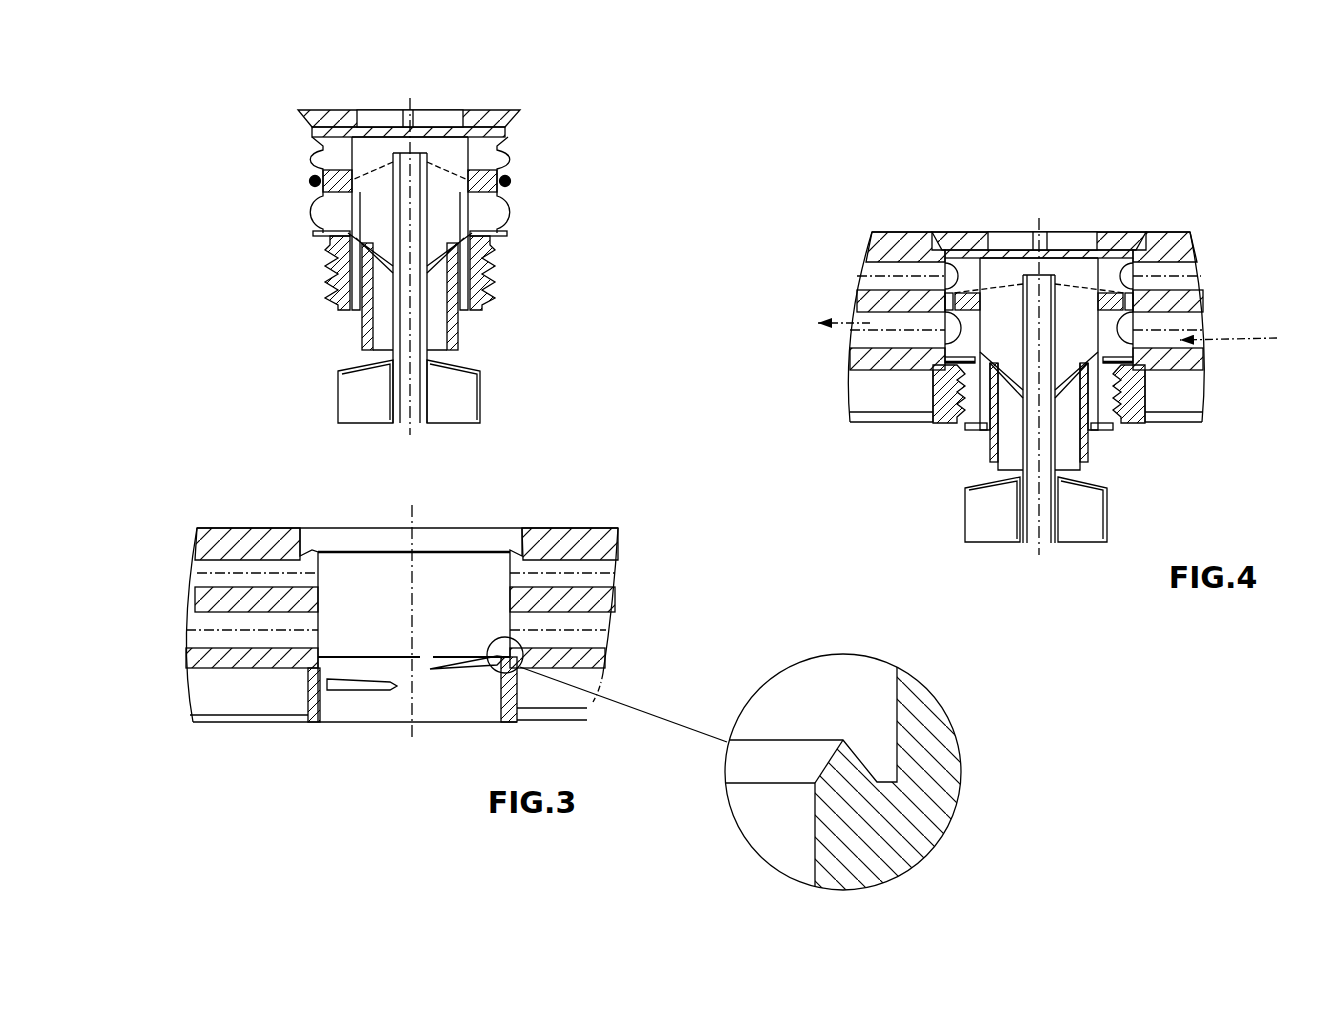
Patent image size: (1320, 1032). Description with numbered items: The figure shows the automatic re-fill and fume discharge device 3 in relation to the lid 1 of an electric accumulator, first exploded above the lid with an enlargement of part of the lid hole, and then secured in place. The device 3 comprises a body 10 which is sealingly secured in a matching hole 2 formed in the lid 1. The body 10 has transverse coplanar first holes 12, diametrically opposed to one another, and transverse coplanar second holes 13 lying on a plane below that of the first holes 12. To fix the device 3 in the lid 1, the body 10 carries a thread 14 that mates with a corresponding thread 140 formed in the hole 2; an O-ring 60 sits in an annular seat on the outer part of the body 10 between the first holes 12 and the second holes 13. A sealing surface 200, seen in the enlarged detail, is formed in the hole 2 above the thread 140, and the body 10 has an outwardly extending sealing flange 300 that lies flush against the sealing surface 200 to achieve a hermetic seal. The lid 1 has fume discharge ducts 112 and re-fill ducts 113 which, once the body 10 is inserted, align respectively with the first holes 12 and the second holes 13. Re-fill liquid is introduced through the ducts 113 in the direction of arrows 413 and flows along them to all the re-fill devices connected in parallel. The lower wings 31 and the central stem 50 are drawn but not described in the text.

In FIG. 3, the lid 1 is at (573, 517).
In FIG. 4, the lid 1 is at (1168, 240).
In FIG. 3, the hole 2 is at (367, 605).
In FIG. 3, the device 3 is at (547, 53).
In FIG. 4, the device 3 is at (1075, 220).
In FIG. 3, the body 10 is at (553, 93).
In FIG. 3, the first holes 12 is at (330, 150).
In FIG. 4, the first holes 12 is at (968, 270).
In FIG. 3, the second holes 13 is at (488, 224).
In FIG. 4, the second holes 13 is at (937, 388).
In FIG. 3, the thread 14 is at (496, 290).
In FIG. 3, the actuating wings 31 is at (470, 385).
In FIG. 4, the actuating wings 31 is at (1093, 512).
In FIG. 3, the stem tube 50 is at (448, 195).
In FIG. 3, the O-ring 60 is at (511, 178).
In FIG. 3, the fume discharge ducts 112 is at (203, 580).
In FIG. 4, the fume discharge ducts 112 is at (878, 273).
In FIG. 3, the refill ducts 113 is at (203, 645).
In FIG. 4, the refill ducts 113 is at (877, 340).
In FIG. 3, the thread 140 is at (370, 690).
In FIG. 3, the sealing surface 200 is at (772, 740).
In FIG. 3, the sealing flange 300 is at (325, 245).
In FIG. 4, the arrows 413 is at (887, 323).